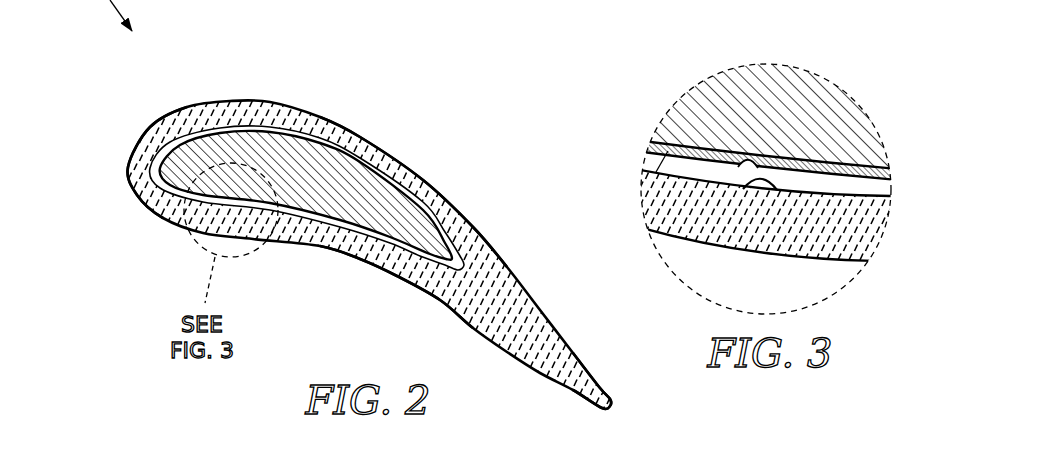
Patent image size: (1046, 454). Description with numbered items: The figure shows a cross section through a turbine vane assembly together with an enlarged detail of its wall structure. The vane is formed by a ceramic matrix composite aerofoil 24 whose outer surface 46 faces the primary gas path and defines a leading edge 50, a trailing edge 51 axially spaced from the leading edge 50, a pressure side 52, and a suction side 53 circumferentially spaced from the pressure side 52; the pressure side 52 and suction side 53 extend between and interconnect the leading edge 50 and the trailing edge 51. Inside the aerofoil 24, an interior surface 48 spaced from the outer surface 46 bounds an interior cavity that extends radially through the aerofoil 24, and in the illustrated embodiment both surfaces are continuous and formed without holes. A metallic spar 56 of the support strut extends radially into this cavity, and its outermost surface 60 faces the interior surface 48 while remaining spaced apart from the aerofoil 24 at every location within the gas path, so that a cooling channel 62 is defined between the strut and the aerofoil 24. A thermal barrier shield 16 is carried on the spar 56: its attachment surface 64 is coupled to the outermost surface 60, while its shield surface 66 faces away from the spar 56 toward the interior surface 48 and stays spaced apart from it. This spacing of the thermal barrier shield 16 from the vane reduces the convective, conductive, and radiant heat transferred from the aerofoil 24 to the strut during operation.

In FIG. 2, the thermal barrier shield 16 is at (338, 219).
In FIG. 3, the thermal barrier shield 16 is at (668, 151).
In FIG. 2, the aerofoil 24 is at (325, 96).
In FIG. 3, the aerofoil 24 is at (685, 245).
In FIG. 3, the outer surface 46 is at (778, 254).
In FIG. 3, the interior surface 48 is at (741, 184).
In FIG. 2, the leading edge 50 is at (127, 164).
In FIG. 2, the trailing edge 51 is at (614, 405).
In FIG. 2, the pressure side 52 is at (384, 276).
In FIG. 2, the suction side 53 is at (428, 164).
In FIG. 2, the spar 56 is at (375, 191).
In FIG. 3, the spar 56 is at (839, 112).
In FIG. 3, the outermost surface 60 is at (748, 160).
In FIG. 3, the cooling channel 62 is at (877, 191).
In FIG. 3, the attachment surface 64 is at (697, 144).
In FIG. 3, the shield surface 66 is at (663, 149).